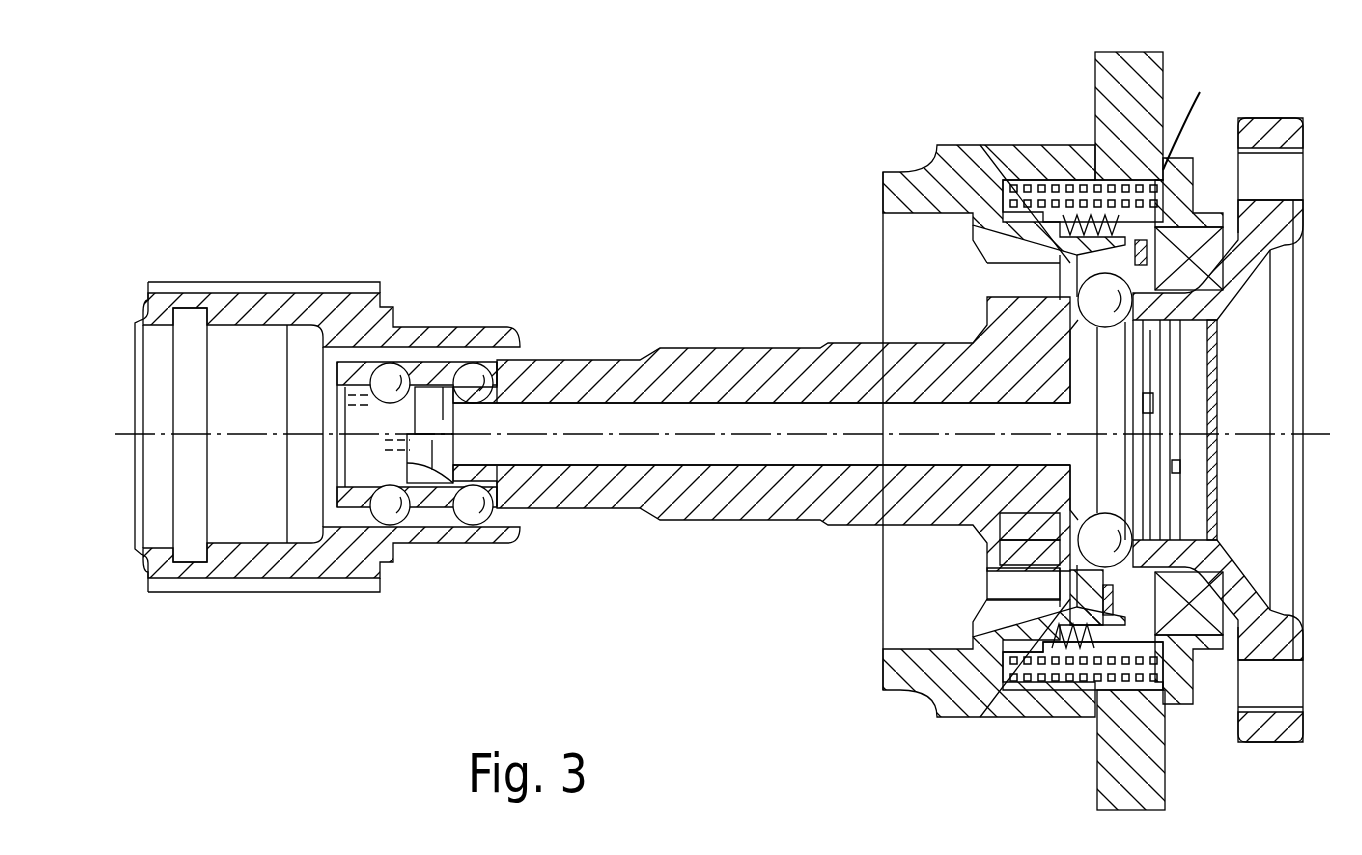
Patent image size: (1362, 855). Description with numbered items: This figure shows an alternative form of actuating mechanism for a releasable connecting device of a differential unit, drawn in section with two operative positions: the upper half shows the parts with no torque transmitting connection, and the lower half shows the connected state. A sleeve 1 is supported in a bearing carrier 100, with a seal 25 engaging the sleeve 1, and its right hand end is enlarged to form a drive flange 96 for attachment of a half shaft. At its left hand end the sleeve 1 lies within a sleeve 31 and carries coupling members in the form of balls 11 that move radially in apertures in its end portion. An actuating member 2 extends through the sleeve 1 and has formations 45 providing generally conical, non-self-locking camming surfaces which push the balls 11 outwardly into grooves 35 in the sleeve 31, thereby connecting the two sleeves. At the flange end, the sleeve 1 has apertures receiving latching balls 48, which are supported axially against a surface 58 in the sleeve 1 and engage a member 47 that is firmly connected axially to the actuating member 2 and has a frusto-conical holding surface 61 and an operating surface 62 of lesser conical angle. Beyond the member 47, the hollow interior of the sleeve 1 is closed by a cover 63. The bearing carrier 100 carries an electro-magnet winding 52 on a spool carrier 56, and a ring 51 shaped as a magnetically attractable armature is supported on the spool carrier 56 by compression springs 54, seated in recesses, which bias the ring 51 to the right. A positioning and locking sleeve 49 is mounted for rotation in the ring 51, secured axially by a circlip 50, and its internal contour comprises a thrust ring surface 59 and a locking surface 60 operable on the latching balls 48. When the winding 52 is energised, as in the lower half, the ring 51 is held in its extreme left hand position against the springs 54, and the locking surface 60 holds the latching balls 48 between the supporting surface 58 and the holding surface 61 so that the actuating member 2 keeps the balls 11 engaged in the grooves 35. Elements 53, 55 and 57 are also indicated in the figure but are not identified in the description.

The sleeve 1 is at (761, 429).
The actuating member 2 is at (553, 405).
The balls 11 is at (473, 365).
The seal 25 is at (1192, 260).
The sleeve 31 is at (288, 300).
The grooves 35 is at (352, 352).
The formations 45 is at (432, 388).
The member 47 is at (1000, 527).
The latching balls 48 is at (1060, 548).
The positioning and locking sleeve 49 is at (1033, 605).
The circlip 50 is at (1057, 668).
The ring 51 is at (1097, 668).
The electro-magnet winding 52 is at (1015, 188).
The seal lip 53 is at (1063, 167).
The compression springs 54 is at (1098, 215).
The housing block 55 is at (1192, 100).
The spool carrier 56 is at (1190, 210).
The bearing ball 57 is at (1103, 334).
The surface 58 is at (1080, 296).
The thrust ring surface 59 is at (1100, 650).
The locking surface 60 is at (1172, 569).
The frusto-conical holding surface 61 is at (1133, 513).
The operating surface 62 is at (1130, 553).
The cover 63 is at (1212, 547).
The drive flange 96 is at (1278, 224).
The bearing carrier 100 is at (952, 182).